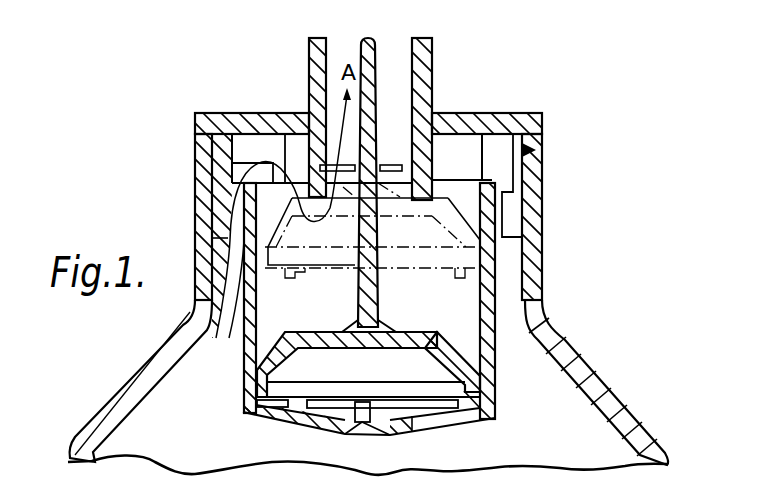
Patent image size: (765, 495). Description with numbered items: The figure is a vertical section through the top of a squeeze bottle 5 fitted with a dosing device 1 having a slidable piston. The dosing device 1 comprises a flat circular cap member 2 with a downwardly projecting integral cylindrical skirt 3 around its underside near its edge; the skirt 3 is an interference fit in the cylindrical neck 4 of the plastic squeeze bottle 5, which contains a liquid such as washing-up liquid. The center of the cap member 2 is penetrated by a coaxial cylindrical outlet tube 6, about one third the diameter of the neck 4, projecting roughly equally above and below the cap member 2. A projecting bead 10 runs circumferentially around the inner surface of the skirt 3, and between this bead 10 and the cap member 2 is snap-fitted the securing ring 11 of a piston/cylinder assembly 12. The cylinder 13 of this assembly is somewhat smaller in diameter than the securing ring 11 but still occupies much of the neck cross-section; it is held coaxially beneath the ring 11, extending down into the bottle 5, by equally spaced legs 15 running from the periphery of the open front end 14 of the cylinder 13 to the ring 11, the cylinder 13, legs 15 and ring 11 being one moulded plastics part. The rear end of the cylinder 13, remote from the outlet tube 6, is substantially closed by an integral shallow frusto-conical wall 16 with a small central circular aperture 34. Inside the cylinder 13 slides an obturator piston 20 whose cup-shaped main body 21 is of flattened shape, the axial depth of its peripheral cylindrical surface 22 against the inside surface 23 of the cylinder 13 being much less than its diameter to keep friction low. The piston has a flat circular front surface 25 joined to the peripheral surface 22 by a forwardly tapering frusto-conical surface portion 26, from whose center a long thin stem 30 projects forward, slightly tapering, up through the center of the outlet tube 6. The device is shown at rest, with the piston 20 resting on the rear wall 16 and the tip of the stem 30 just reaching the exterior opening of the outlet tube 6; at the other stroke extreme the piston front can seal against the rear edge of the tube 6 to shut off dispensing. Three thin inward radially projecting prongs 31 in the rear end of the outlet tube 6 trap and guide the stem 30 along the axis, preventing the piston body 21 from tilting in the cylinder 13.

The dosing device 1 is at (382, 247).
The cap member 2 is at (518, 122).
The skirt 3 is at (524, 163).
The neck 4 is at (535, 258).
The squeeze bottle 5 is at (607, 390).
The outlet tube 6 is at (428, 80).
The bead 10 is at (226, 182).
The securing ring 11 is at (226, 148).
The piston/cylinder assembly 12 is at (272, 295).
The cylinder 13 is at (488, 288).
The open front end 14 is at (458, 186).
The legs 15 is at (536, 150).
The frusto-conical wall 16 is at (428, 423).
The obturator piston 20 is at (290, 378).
The main body 21 is at (417, 335).
The peripheral cylindrical surface 22 is at (490, 392).
The inside surface 23 is at (485, 340).
The front surface 25 is at (328, 333).
The frusto-conical surface portion 26 is at (290, 378).
The stem 30 is at (382, 287).
The prongs 31 is at (333, 163).
The aperture 34 is at (368, 436).